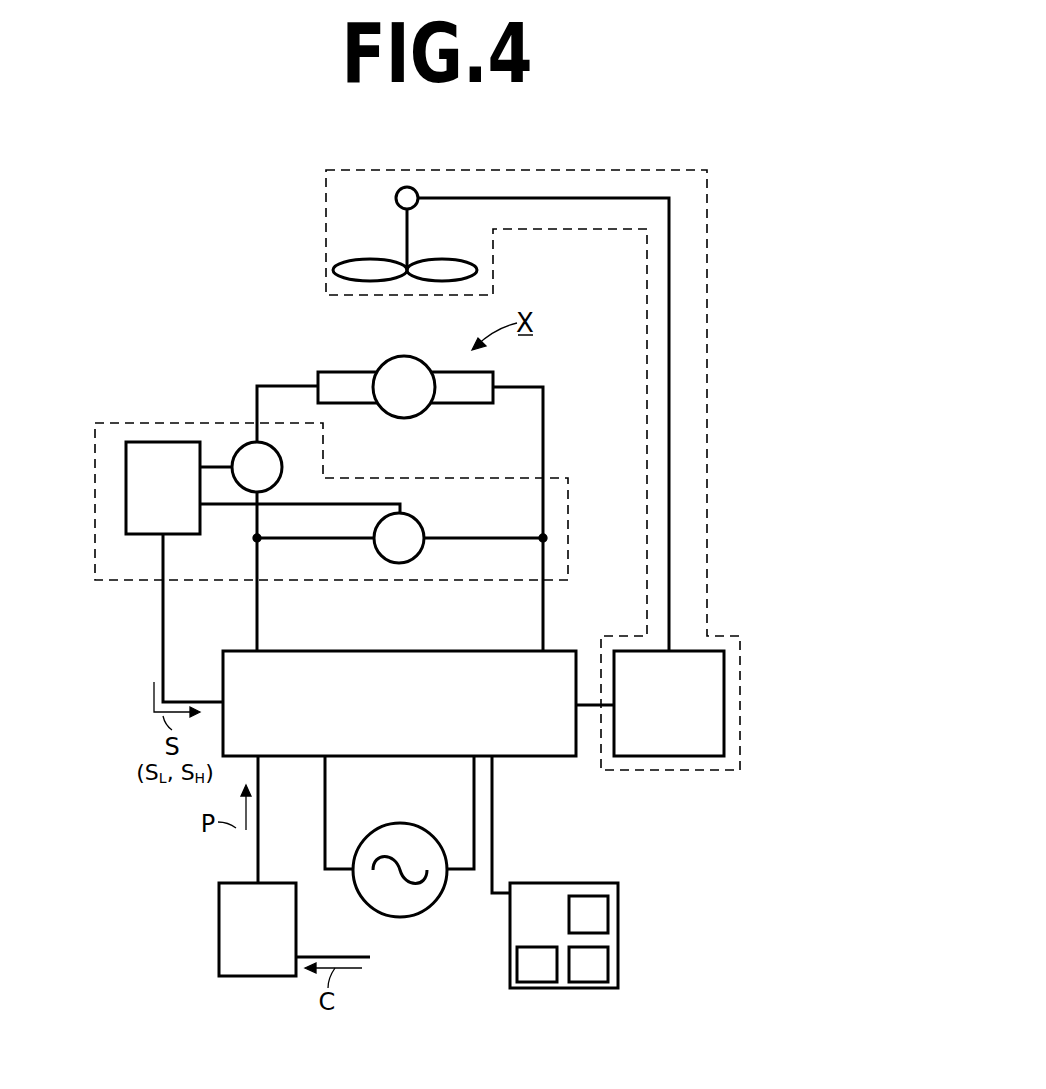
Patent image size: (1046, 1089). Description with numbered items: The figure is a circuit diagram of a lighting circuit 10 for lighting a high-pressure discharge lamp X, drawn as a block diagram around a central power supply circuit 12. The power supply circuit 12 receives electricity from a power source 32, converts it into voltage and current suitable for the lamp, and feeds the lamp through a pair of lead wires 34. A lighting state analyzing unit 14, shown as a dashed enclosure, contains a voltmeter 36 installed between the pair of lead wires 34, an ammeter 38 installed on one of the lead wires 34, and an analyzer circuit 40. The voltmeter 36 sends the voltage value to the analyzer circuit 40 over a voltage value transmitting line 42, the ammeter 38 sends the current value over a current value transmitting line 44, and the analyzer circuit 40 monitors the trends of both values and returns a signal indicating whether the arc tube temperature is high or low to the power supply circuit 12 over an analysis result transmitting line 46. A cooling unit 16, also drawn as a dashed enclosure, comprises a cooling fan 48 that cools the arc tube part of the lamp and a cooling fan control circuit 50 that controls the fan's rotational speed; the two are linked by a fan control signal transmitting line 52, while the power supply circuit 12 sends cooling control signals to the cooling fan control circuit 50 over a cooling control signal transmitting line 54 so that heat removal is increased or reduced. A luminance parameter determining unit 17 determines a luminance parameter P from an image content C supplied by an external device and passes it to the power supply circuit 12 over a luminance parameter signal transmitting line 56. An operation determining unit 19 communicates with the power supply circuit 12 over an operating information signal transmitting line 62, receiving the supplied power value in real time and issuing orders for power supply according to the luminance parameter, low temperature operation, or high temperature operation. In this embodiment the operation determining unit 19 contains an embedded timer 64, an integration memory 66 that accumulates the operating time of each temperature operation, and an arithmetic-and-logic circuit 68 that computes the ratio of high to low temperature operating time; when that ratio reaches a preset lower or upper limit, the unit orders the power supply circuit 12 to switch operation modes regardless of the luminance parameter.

The lighting circuit 10 is at (662, 872).
The power supply circuit 12 is at (513, 760).
The lighting state analyzing unit 14 is at (95, 547).
The cooling unit 16 is at (662, 770).
The luminance parameter determining unit 17 is at (218, 932).
The operation determining unit 19 is at (566, 962).
The power source 32 is at (415, 913).
The lead wires 34 is at (285, 385).
The voltmeter 36 is at (423, 522).
The ammeter 38 is at (240, 445).
The analyzer circuit 40 is at (126, 485).
The voltage value transmitting line 42 is at (225, 505).
The current value transmitting line 44 is at (217, 463).
The analysis result transmitting line 46 is at (162, 668).
The cooling fan 48 is at (393, 245).
The cooling fan control circuit 50 is at (725, 710).
The fan control signal transmitting line 52 is at (672, 552).
The cooling control signal transmitting line 54 is at (585, 705).
The luminance parameter signal transmitting line 56 is at (261, 810).
The operating information signal transmitting line 62 is at (494, 845).
The timer 64 is at (608, 912).
The integration memory 66 is at (608, 958).
The arithmetic-and-logic circuit 68 is at (517, 963).